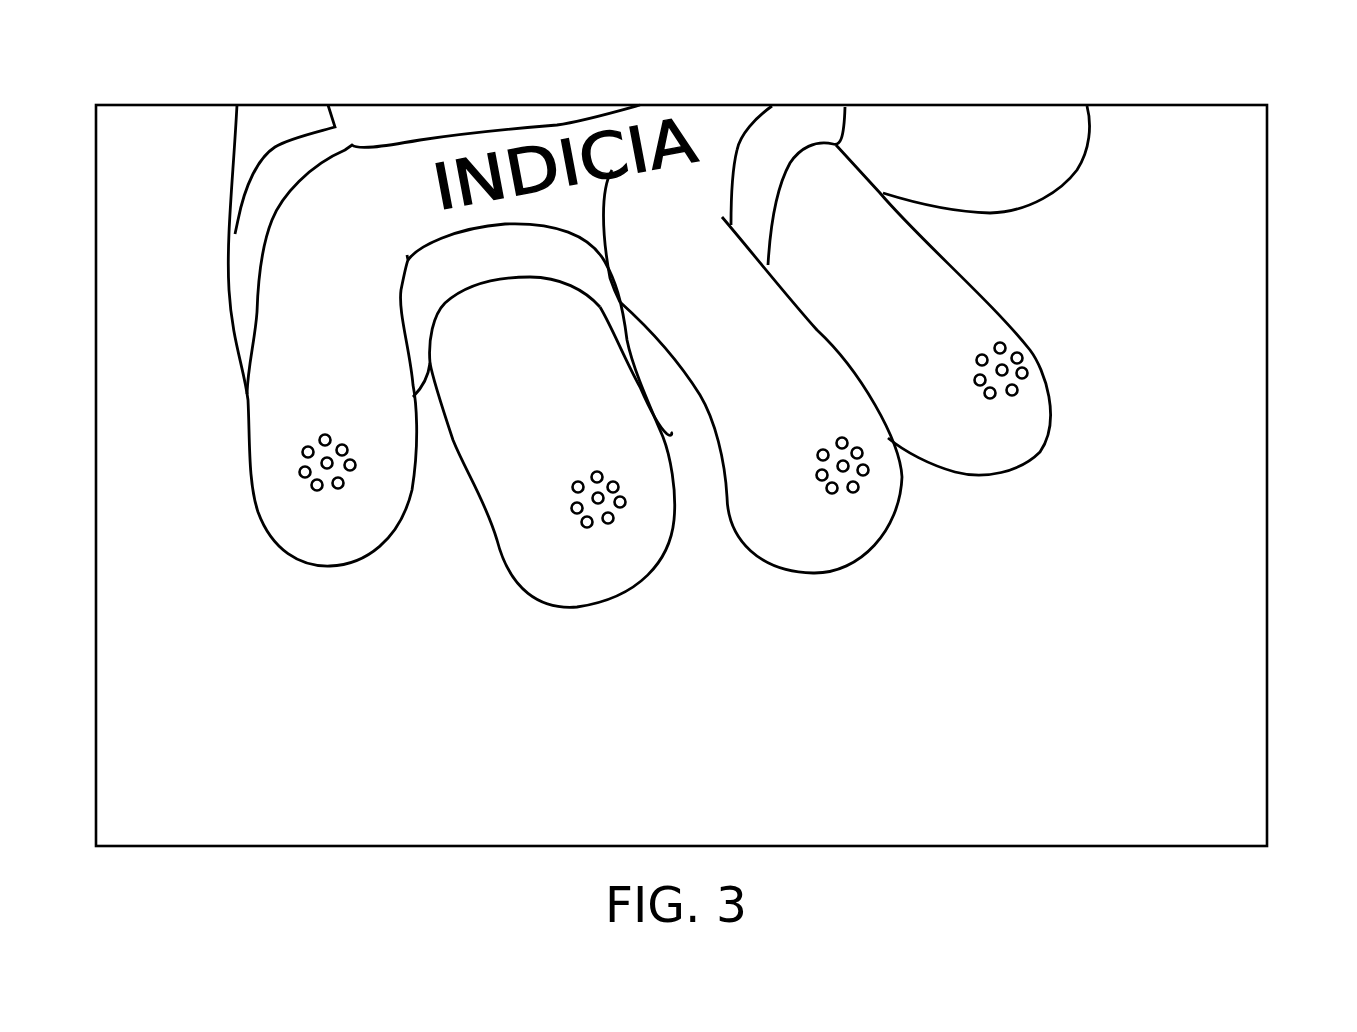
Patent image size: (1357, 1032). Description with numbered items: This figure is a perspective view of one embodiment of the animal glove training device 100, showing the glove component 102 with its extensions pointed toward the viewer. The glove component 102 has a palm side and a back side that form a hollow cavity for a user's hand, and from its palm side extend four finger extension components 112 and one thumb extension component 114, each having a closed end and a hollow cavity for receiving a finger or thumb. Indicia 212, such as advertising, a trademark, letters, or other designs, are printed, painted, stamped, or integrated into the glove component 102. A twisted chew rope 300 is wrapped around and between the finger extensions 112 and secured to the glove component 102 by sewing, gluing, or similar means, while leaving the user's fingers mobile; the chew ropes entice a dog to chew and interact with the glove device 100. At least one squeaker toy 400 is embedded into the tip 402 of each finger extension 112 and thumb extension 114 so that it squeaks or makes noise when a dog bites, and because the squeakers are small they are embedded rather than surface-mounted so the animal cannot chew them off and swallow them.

The animal glove training device 100 is at (1077, 268).
The glove component 102 is at (297, 259).
The finger extension component 112 is at (298, 384).
The thumb extension component 114 is at (1043, 152).
The indicia 212 is at (868, 411).
The twisted chew rope 300 is at (473, 257).
The squeaker toy 400 is at (843, 471).
The tip 402 is at (877, 483).